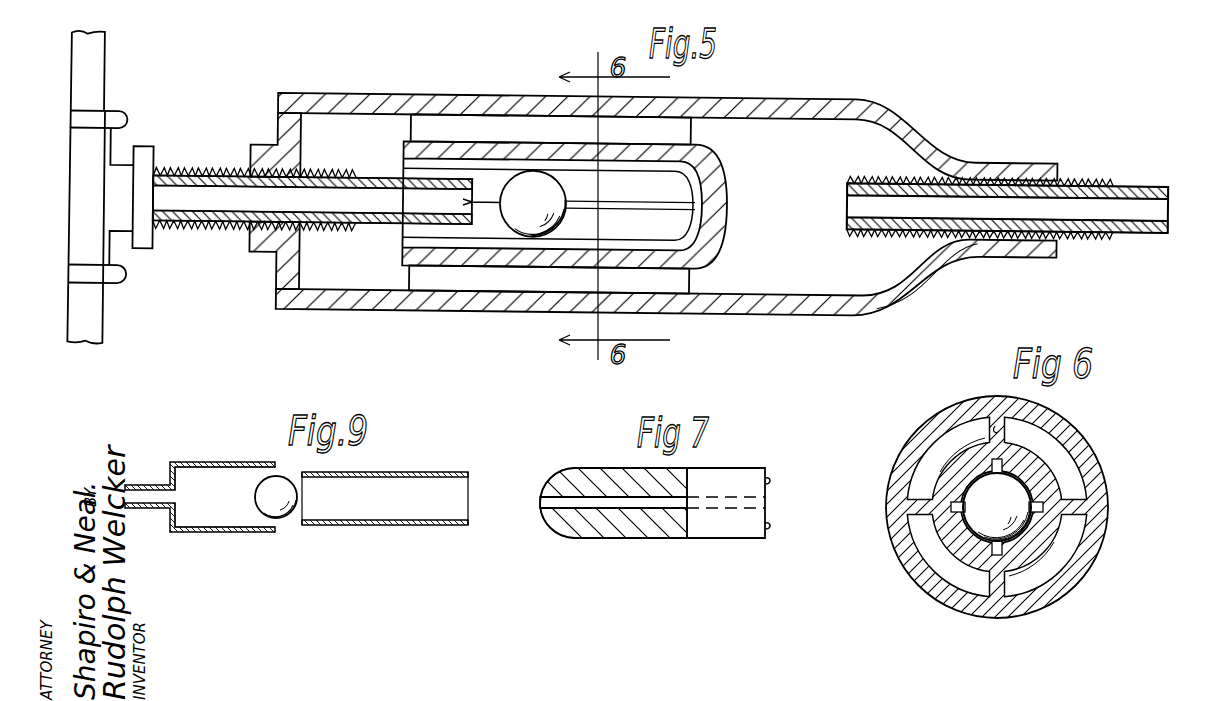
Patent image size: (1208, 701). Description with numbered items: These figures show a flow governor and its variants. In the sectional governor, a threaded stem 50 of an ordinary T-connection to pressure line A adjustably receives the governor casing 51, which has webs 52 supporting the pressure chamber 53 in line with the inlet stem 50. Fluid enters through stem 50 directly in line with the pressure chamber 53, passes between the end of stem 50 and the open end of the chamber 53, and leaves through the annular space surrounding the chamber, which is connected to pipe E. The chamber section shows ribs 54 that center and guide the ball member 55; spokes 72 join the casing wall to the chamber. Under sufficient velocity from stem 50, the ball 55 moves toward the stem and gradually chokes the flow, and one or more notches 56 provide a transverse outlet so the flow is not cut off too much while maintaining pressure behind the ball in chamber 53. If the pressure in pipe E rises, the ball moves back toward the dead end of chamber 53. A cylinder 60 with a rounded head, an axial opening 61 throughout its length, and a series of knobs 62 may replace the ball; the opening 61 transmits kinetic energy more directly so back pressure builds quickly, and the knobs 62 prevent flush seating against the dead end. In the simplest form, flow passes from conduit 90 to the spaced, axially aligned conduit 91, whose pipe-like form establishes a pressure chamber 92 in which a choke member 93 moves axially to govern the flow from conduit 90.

In FIG. 5, the pressure line A is at (93, 93).
In FIG. 5, the threaded stem 50 is at (182, 229).
In FIG. 5, the housing 51 is at (470, 96).
In FIG. 5, the webs 52 is at (647, 126).
In FIG. 5, the pressure chamber 53 is at (685, 181).
In FIG. 6, the ribs 54 is at (1072, 530).
In FIG. 5, the ball member 55 is at (538, 205).
In FIG. 5, the notches 56 is at (464, 203).
In FIG. 7, the cylinder 60 is at (633, 525).
In FIG. 7, the axial opening 61 is at (590, 503).
In FIG. 6, the knobs 62 is at (996, 465).
In FIG. 7, the knobs 62 is at (768, 527).
In FIG. 6, the spoke 72 is at (1000, 427).
In FIG. 9, the conduit 90 is at (403, 473).
In FIG. 9, the conduit 91 is at (199, 463).
In FIG. 9, the pressure chamber 92 is at (210, 494).
In FIG. 9, the choke member 93 is at (262, 522).
In FIG. 5, the pipe E is at (1133, 178).